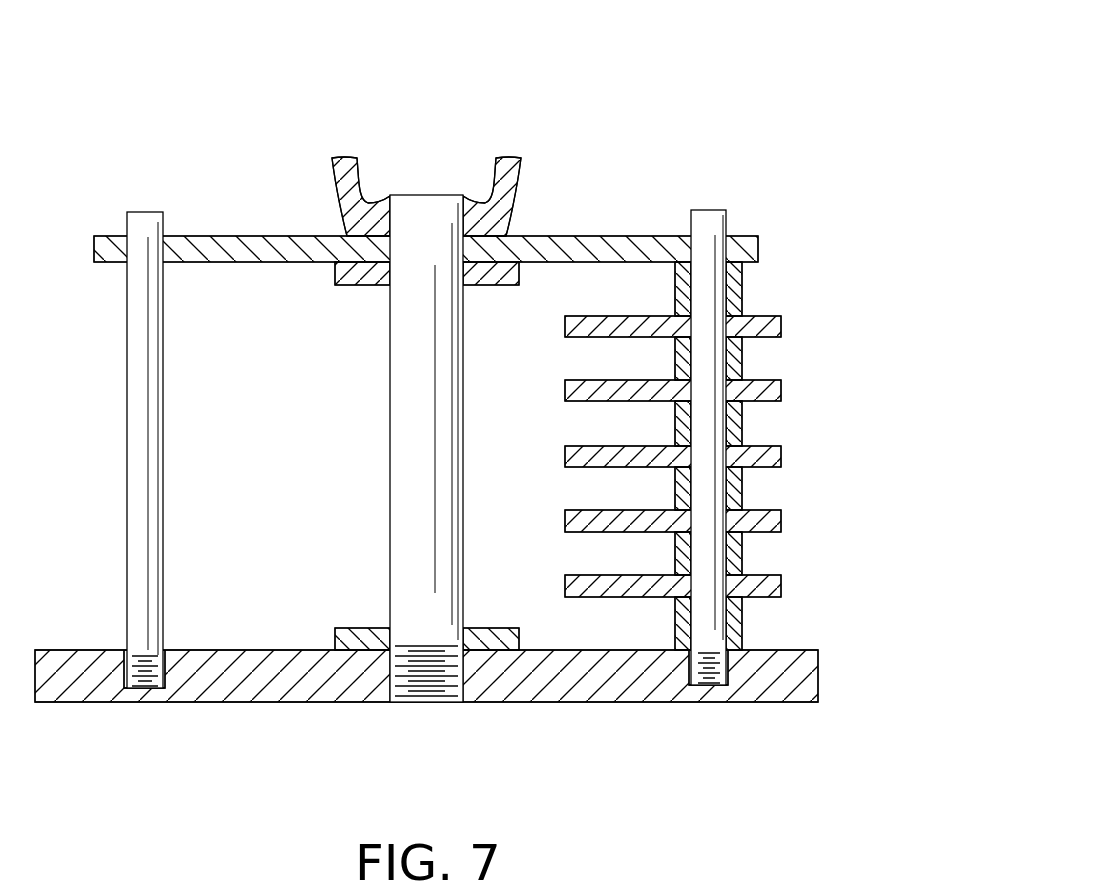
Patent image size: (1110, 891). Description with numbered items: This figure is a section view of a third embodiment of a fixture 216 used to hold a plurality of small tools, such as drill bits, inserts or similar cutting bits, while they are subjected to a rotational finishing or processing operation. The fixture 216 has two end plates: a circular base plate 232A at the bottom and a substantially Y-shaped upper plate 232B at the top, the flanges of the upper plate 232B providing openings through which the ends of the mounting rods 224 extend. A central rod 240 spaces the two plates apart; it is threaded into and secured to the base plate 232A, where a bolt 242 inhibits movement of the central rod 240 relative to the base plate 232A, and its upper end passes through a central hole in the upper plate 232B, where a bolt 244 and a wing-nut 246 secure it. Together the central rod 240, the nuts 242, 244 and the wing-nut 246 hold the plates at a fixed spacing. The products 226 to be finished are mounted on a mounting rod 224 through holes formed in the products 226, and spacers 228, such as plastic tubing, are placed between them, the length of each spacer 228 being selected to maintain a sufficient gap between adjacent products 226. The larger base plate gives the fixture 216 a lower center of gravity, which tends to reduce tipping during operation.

The fixture 216 is at (670, 68).
The mounting rod 224 is at (150, 456).
The products 226 is at (781, 323).
The spacers 228 is at (742, 287).
The base plate 232A is at (607, 702).
The upper plate 232B is at (616, 236).
The central rod 240 is at (410, 494).
The bolt 242 is at (348, 628).
The bolt 244 is at (358, 286).
The wing-nut 246 is at (518, 183).